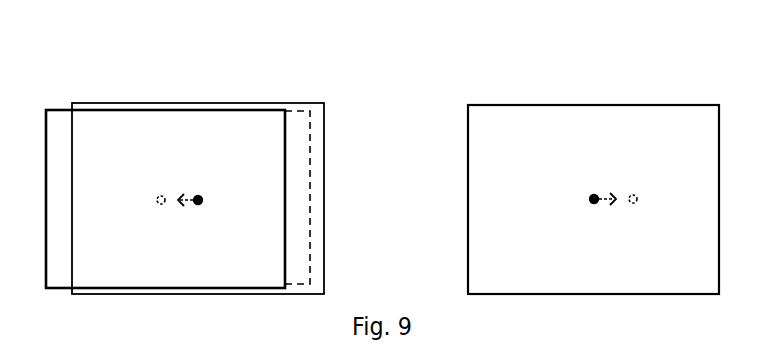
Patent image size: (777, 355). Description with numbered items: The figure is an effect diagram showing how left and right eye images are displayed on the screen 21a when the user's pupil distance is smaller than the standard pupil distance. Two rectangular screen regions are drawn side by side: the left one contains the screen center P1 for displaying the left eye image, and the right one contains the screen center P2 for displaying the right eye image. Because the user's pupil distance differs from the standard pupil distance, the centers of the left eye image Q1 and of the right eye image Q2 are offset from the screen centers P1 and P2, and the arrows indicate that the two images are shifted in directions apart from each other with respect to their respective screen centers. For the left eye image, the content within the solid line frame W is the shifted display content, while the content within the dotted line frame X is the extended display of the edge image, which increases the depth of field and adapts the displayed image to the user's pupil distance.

The solid line frame W is at (58, 109).
The screen 21a is at (395, 158).
The dotted line frame X is at (310, 142).
The screen center for displaying the left eye image P1 is at (194, 182).
The center of the left eye image Q1 is at (153, 181).
The screen center for displaying the right eye image P2 is at (594, 180).
The center of the right eye image Q2 is at (635, 179).